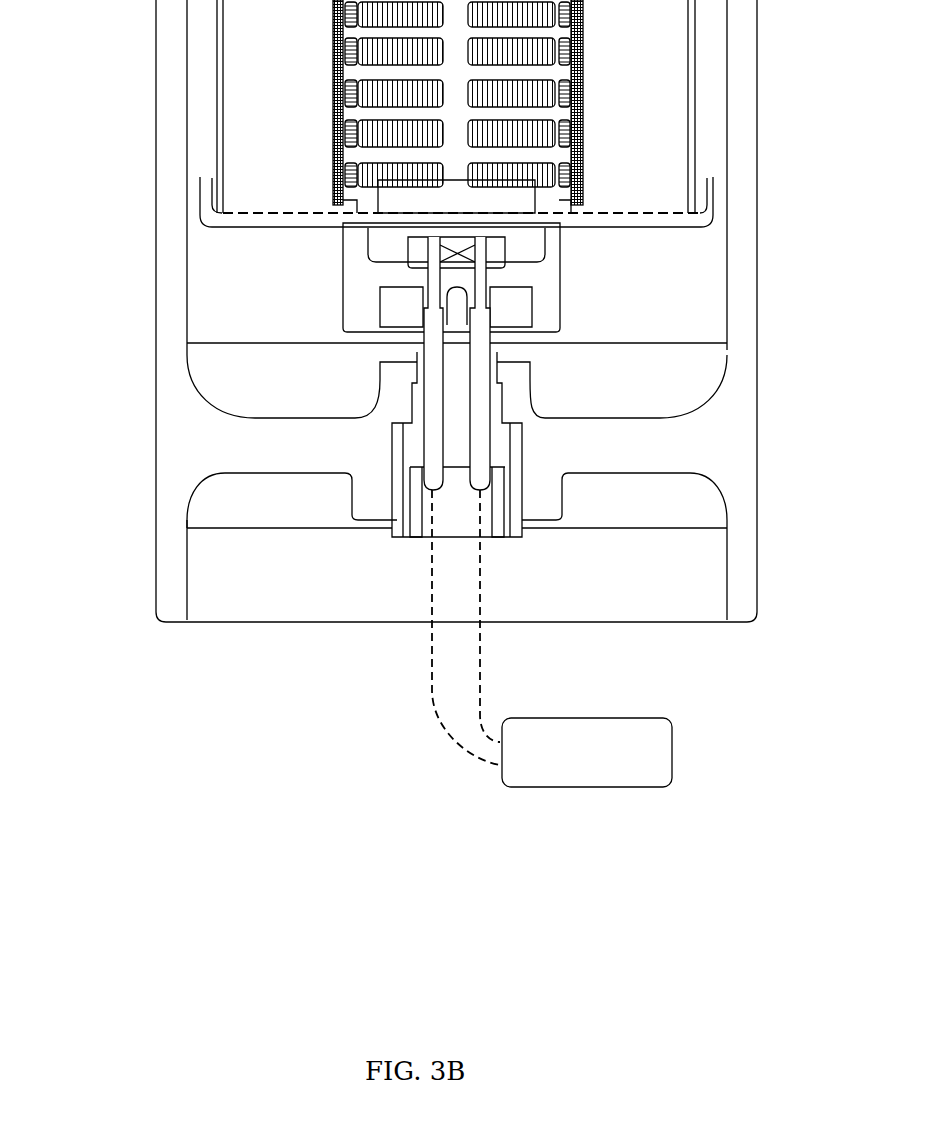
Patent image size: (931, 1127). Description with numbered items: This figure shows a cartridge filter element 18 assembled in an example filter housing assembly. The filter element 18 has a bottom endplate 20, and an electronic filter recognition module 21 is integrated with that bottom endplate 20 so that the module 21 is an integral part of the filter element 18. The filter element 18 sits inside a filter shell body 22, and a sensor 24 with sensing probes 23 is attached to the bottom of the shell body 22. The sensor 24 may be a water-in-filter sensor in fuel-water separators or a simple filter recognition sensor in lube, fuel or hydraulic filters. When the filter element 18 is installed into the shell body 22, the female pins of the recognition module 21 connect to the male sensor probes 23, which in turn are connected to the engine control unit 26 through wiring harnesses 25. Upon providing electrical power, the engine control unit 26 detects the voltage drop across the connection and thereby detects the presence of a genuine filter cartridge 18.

The cartridge filter element 18 is at (310, 91).
The bottom endplate 20 is at (207, 200).
The electronic filter recognition module 21 is at (370, 300).
The filter shell body 22 is at (170, 484).
The sensing probes 23 is at (430, 425).
The sensor 24 is at (500, 453).
The wiring harnesses 25 is at (440, 636).
The engine control unit 26 is at (672, 752).